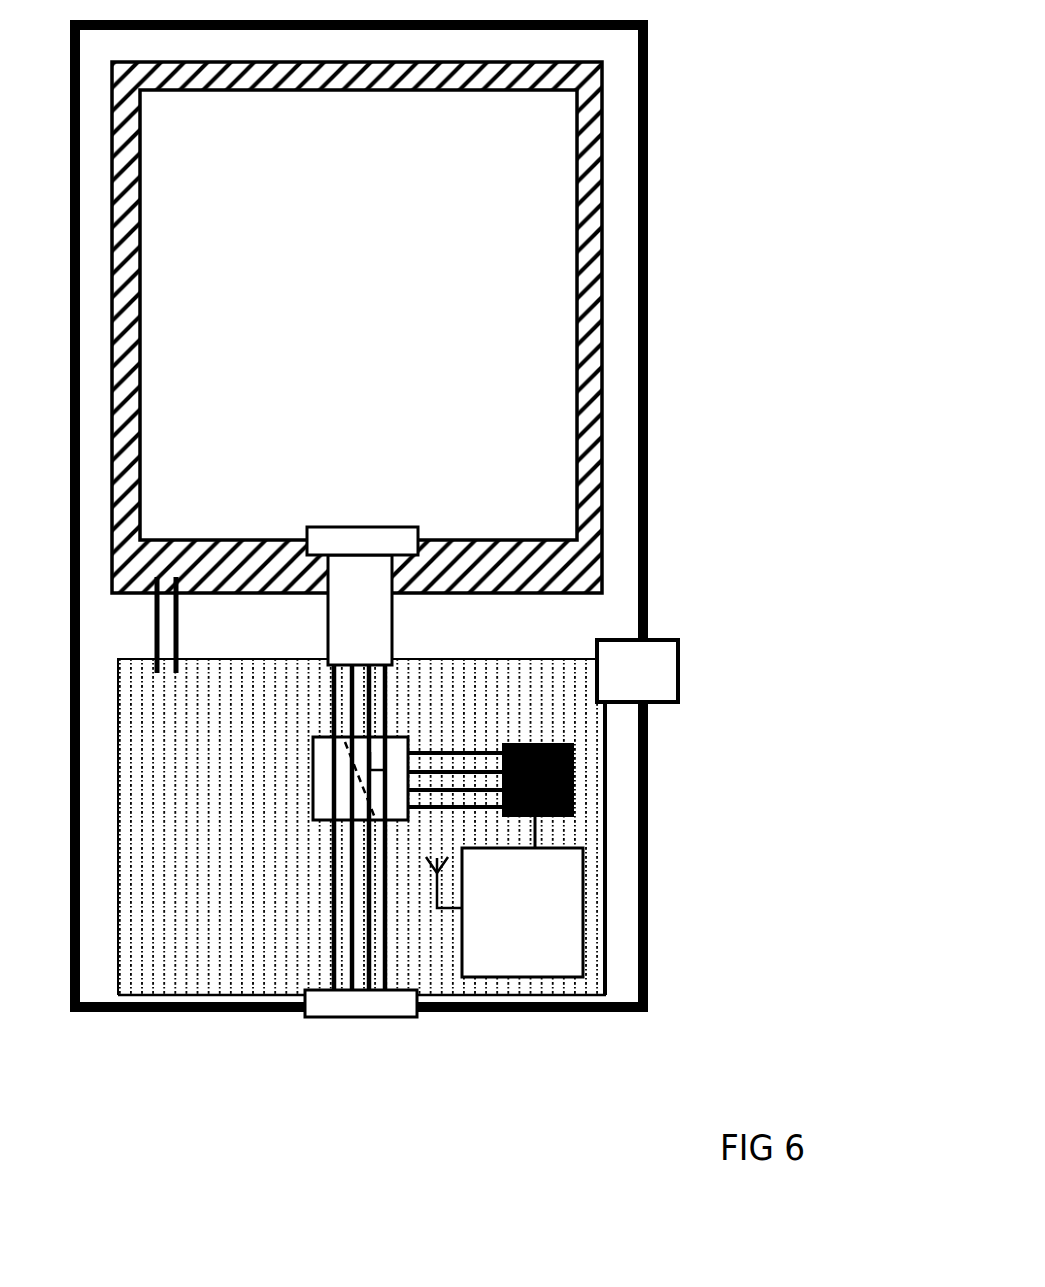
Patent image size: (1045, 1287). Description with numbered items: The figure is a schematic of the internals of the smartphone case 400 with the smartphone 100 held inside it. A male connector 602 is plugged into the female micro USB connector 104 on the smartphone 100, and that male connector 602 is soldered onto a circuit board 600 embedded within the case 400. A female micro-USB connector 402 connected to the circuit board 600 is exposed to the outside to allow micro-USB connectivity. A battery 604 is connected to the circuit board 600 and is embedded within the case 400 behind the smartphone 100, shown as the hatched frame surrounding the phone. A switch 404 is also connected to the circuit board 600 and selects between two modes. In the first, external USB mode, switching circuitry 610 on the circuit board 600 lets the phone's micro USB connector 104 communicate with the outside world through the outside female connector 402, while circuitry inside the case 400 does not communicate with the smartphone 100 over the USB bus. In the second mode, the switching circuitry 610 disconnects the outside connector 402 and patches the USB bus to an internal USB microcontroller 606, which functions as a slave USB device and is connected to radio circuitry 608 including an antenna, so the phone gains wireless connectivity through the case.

The smartphone 100 is at (405, 372).
The female micro USB connector 104 is at (367, 527).
The smartphone case 400 is at (648, 258).
The female micro-USB connector 402 is at (352, 1017).
The switch 404 is at (679, 672).
The circuit board 600 is at (220, 900).
The male connector 602 is at (382, 650).
The battery 604 is at (357, 327).
The internal USB microcontroller 606 is at (577, 777).
The radio circuitry 608 is at (567, 940).
The switching circuitry 610 is at (313, 800).